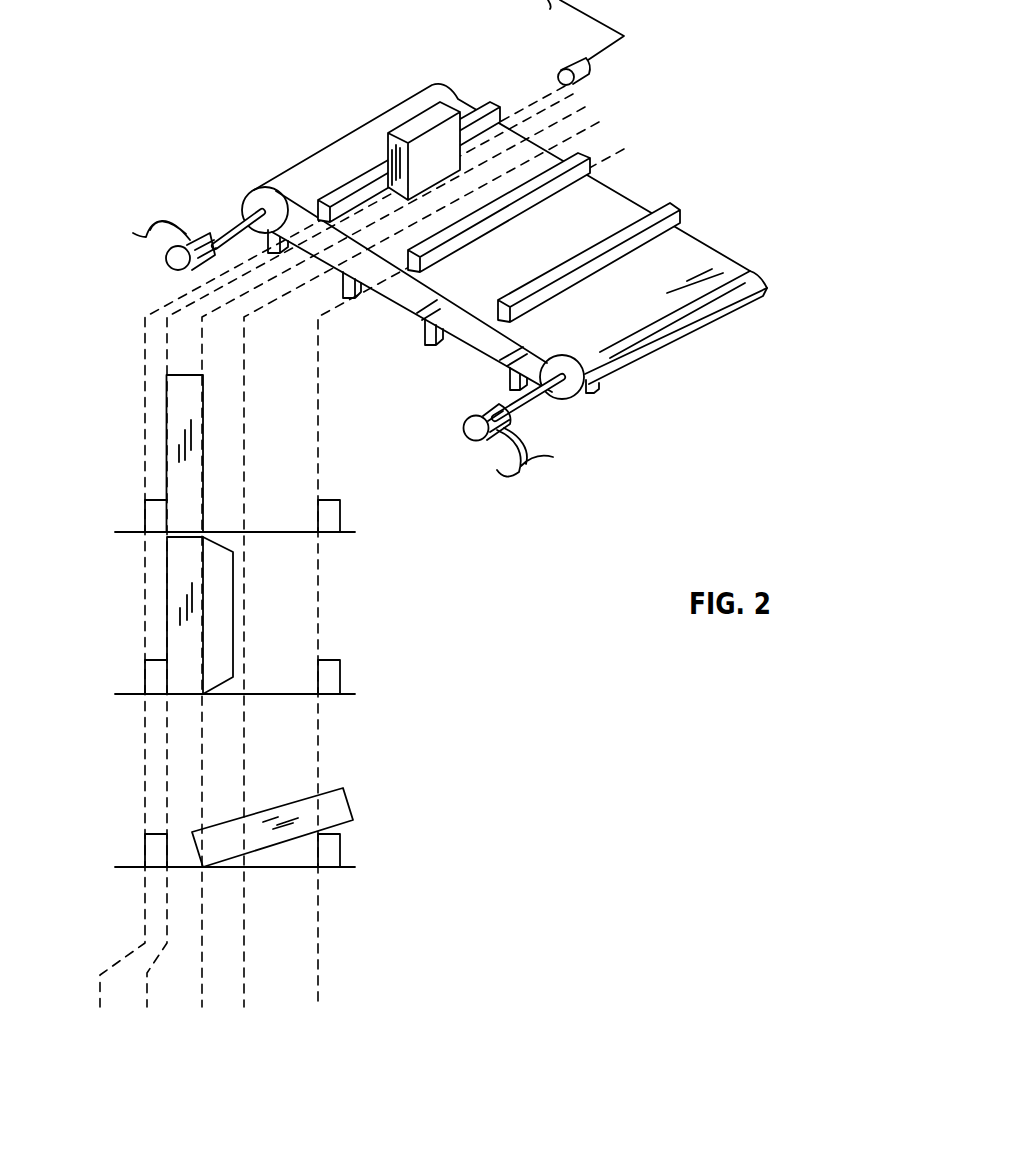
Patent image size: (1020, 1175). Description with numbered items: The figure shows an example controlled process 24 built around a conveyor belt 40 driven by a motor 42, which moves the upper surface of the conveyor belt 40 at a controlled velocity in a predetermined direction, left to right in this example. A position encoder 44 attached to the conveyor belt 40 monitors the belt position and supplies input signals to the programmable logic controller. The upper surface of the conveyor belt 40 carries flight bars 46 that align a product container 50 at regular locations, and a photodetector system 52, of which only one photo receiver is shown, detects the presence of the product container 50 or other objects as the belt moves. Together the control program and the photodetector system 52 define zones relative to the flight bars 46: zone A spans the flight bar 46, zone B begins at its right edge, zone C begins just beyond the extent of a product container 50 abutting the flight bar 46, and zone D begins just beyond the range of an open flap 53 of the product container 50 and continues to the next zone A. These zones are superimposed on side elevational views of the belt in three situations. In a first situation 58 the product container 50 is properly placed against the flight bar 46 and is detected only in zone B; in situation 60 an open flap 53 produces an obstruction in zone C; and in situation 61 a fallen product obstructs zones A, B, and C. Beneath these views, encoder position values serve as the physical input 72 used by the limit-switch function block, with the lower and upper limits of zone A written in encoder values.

The controlled process 24 is at (726, 94).
The conveyor belt 40 is at (786, 238).
The motor 42 is at (495, 428).
The position encoder 44 is at (198, 228).
The flight bars 46 is at (604, 178).
The product container 50 is at (432, 122).
The photodetector system 52 is at (588, 78).
The open flap 53 is at (220, 617).
The first situation 58 is at (418, 471).
The situation of open flap 60 is at (418, 609).
The situation of fallen product 61 is at (418, 787).
The physical input 72 is at (392, 1030).